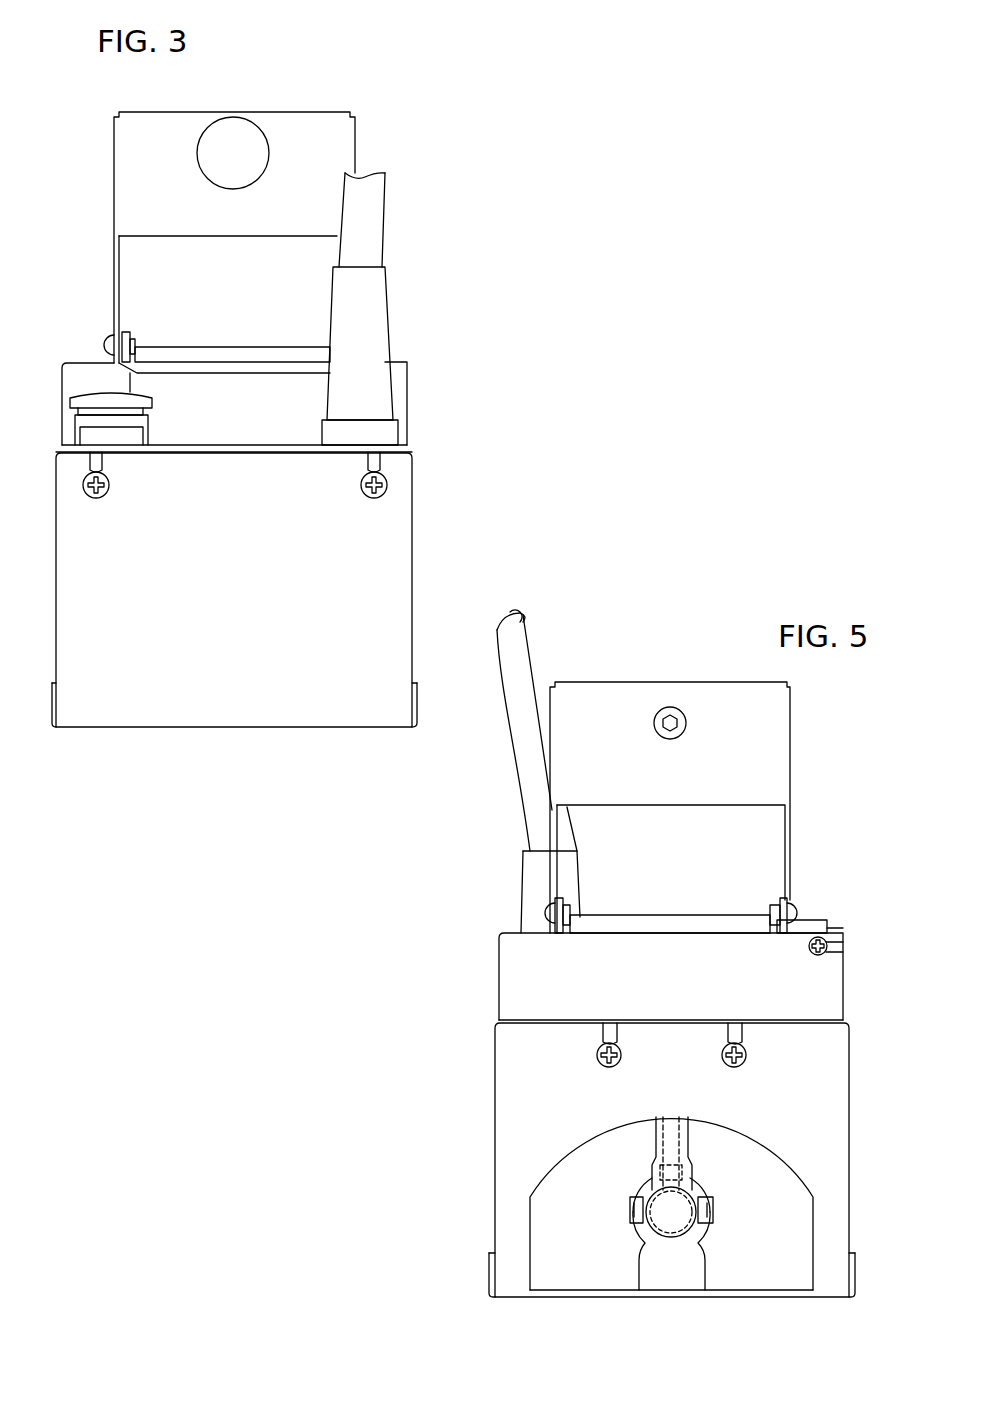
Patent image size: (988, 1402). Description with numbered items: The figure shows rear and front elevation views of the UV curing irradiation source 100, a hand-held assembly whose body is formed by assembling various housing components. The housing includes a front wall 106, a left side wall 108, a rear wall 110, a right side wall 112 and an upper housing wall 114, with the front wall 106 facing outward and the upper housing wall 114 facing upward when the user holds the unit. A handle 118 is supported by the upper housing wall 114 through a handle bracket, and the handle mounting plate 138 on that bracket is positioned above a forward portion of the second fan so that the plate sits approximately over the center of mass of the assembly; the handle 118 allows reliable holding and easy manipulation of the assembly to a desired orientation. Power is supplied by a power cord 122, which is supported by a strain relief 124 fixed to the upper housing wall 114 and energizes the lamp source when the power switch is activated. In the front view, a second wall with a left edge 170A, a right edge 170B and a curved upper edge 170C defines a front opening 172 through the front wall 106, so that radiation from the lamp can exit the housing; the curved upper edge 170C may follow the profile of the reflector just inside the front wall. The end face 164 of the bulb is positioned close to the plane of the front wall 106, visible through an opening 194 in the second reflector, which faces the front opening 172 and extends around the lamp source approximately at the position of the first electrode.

In FIG. 3, the UV curing irradiation source 100 is at (58, 128).
In FIG. 5, the UV curing irradiation source 100 is at (848, 729).
In FIG. 5, the front wall 106 is at (515, 1135).
In FIG. 5, the left side wall 108 is at (850, 1090).
In FIG. 3, the rear wall 110 is at (115, 702).
In FIG. 3, the right side wall 112 is at (412, 528).
In FIG. 5, the right side wall 112 is at (493, 1088).
In FIG. 3, the upper housing wall 114 is at (273, 443).
In FIG. 3, the handle 118 is at (235, 135).
In FIG. 3, the power cord 122 is at (375, 204).
In FIG. 5, the power cord 122 is at (522, 653).
In FIG. 3, the strain relief 124 is at (378, 282).
In FIG. 5, the strain relief 124 is at (550, 892).
In FIG. 3, the handle mounting plate 138 is at (322, 122).
In FIG. 5, the handle mounting plate 138 is at (607, 695).
In FIG. 5, the end face of the bulb 164 is at (673, 1217).
In FIG. 5, the left edge 170A is at (812, 1235).
In FIG. 5, the right edge 170B is at (530, 1242).
In FIG. 5, the curved upper edge 170C is at (558, 1168).
In FIG. 5, the front opening 172 is at (553, 1208).
In FIG. 5, the opening 194 is at (648, 1260).